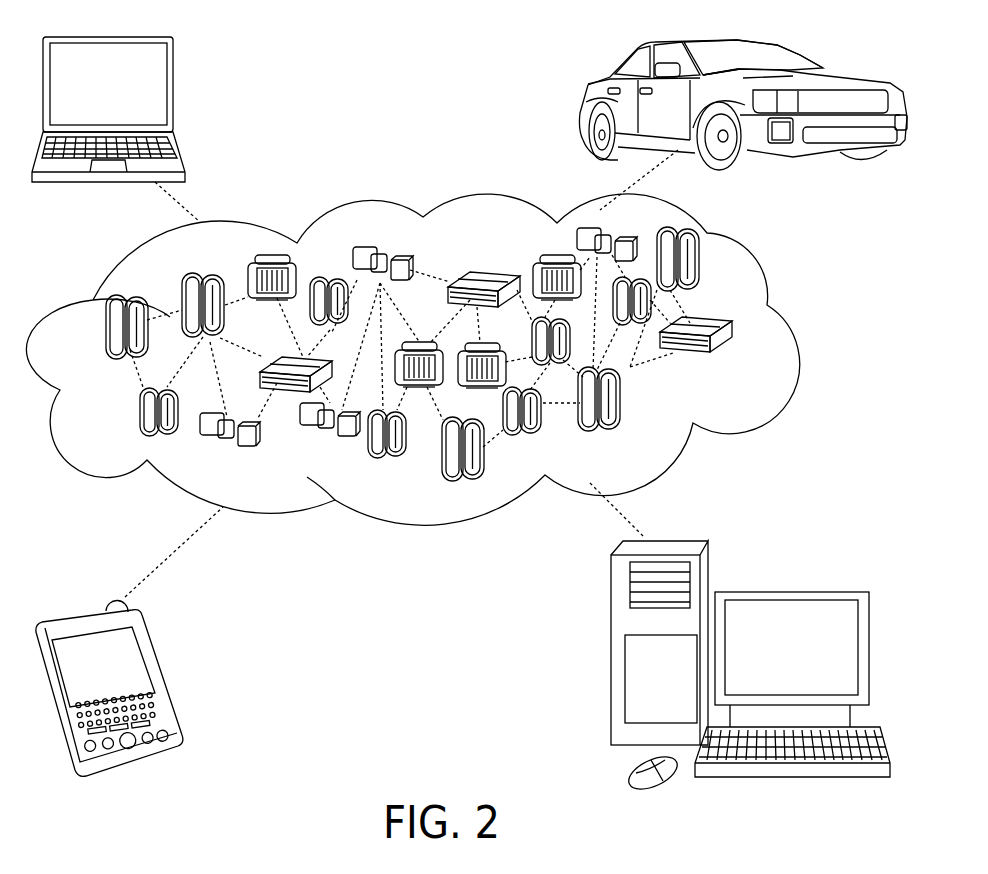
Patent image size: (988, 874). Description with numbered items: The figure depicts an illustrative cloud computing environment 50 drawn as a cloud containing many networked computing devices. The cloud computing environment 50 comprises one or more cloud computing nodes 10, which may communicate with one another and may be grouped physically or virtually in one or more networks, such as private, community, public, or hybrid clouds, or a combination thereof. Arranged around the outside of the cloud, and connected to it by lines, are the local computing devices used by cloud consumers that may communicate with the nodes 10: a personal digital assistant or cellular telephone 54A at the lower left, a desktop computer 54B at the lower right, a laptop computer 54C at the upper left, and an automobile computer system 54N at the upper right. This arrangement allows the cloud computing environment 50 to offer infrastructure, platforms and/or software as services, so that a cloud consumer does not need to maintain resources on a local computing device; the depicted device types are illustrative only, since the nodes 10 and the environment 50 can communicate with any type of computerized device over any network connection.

The cloud computing nodes 10 is at (735, 361).
The cloud computing environment 50 is at (790, 333).
The personal digital assistant (PDA) or cellular telephone 54A is at (163, 678).
The desktop computer 54B is at (790, 592).
The laptop computer 54C is at (176, 93).
The automobile computer system 54N is at (583, 110).